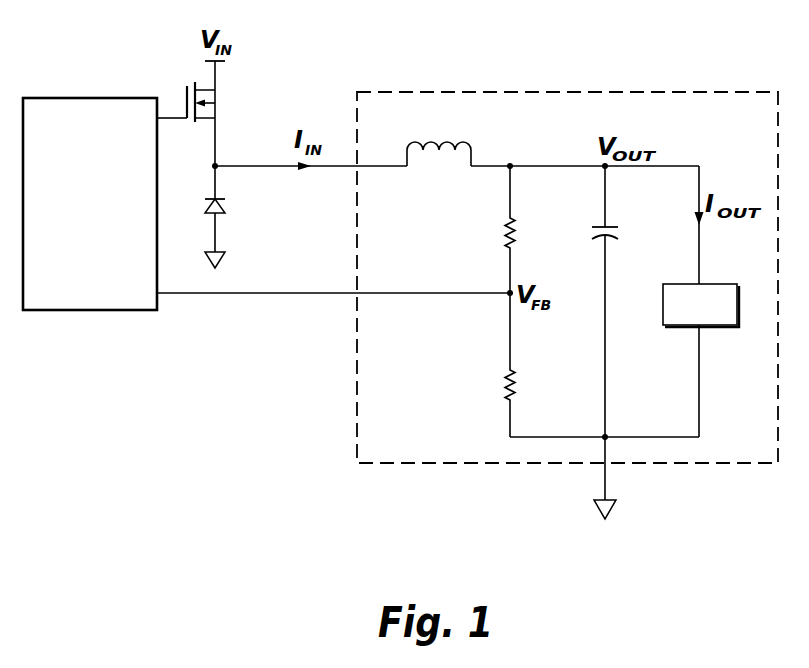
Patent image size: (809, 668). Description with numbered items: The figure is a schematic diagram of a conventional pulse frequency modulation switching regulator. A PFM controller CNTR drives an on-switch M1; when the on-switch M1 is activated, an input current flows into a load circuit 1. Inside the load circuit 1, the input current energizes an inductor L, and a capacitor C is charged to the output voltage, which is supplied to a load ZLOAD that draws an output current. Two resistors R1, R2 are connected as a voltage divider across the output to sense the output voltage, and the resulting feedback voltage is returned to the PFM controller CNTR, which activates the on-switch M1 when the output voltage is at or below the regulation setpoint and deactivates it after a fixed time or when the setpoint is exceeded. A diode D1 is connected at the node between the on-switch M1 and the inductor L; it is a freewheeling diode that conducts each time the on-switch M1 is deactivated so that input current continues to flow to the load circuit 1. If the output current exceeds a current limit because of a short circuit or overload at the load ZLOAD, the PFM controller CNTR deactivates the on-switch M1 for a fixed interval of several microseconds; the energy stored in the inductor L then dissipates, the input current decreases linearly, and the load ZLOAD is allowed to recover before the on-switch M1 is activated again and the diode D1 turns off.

The load circuit 1 is at (384, 90).
The PFM controller CNTR is at (97, 98).
The on-switch M1 is at (215, 113).
The diode D1 is at (229, 217).
The inductor L is at (439, 159).
The resistor R1 is at (499, 229).
The resistor R2 is at (499, 381).
The capacitor C is at (613, 301).
The load ZLOAD is at (701, 360).